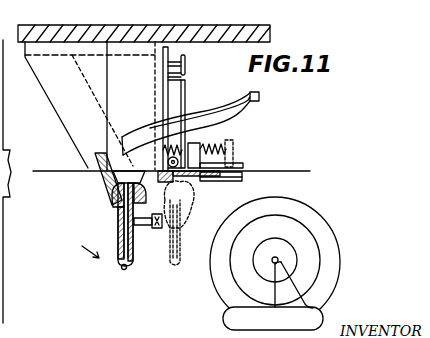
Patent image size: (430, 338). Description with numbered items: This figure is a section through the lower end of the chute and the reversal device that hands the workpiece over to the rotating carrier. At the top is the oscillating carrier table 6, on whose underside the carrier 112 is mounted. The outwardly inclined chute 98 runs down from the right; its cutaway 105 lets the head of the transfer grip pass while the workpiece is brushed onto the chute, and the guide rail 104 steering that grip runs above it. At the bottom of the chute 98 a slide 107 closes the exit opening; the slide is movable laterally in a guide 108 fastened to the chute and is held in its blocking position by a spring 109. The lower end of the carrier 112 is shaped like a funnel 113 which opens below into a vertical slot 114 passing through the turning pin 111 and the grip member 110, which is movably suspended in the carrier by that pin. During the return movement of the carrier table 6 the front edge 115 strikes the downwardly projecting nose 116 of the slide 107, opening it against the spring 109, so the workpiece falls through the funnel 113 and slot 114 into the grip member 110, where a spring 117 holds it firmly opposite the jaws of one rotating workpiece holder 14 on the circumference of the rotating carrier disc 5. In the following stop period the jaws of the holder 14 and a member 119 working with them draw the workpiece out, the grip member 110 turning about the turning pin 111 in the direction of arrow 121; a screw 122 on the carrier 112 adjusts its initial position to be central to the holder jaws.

The oscillating carrier table 6 is at (118, 37).
The carrier 112 is at (76, 117).
The rotating carrier disc 5 is at (293, 168).
The cutaway 105 is at (175, 78).
The chute 98 is at (187, 95).
The guide rail 104 is at (250, 98).
The spring 109 is at (208, 147).
The front edge 115 is at (145, 122).
The guide 108 is at (241, 180).
The slide 107 is at (186, 180).
The nose 116 is at (178, 190).
The funnel 113 is at (109, 181).
The turning pin 111 is at (110, 202).
The grip member 110 is at (132, 262).
The vertical slot 114 is at (120, 231).
The screw 122 is at (151, 234).
The spring 117 is at (122, 266).
The arrow 121 is at (112, 262).
The rotating workpiece holder 14 is at (312, 227).
The member 119 is at (286, 292).